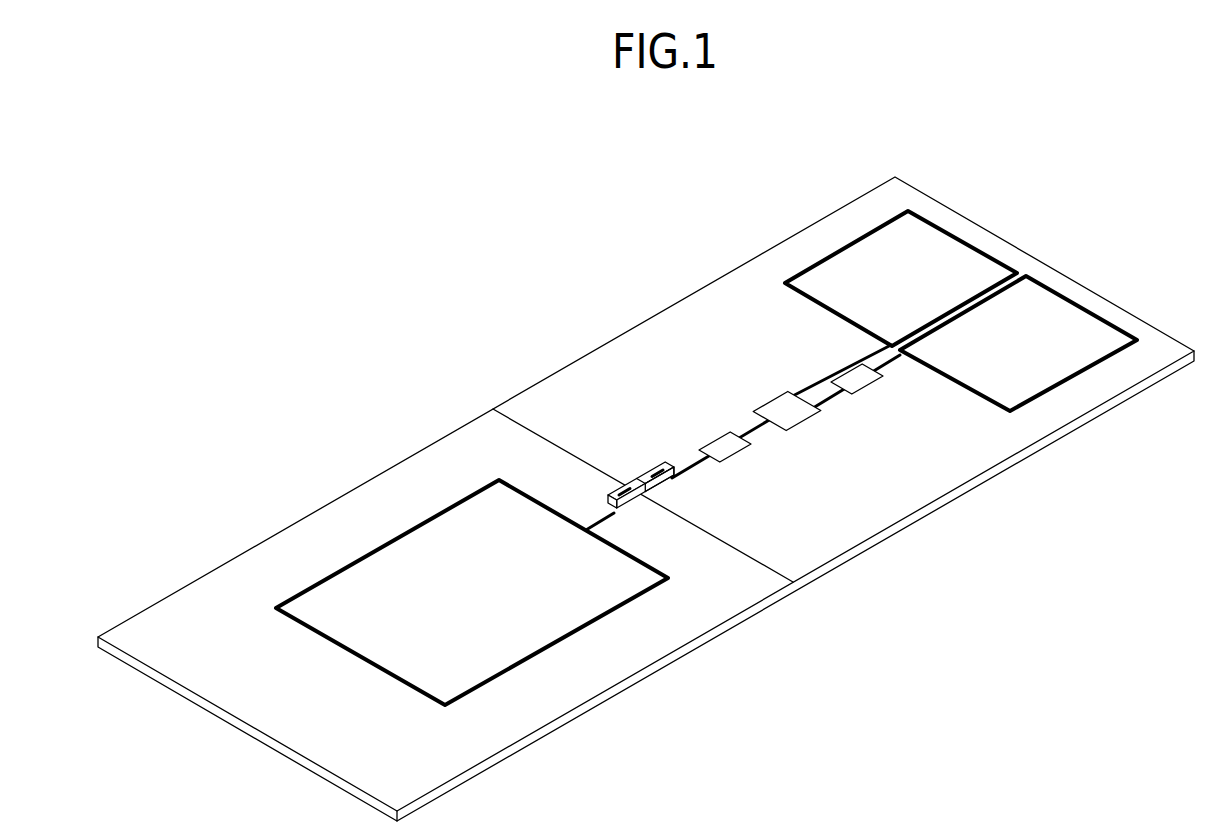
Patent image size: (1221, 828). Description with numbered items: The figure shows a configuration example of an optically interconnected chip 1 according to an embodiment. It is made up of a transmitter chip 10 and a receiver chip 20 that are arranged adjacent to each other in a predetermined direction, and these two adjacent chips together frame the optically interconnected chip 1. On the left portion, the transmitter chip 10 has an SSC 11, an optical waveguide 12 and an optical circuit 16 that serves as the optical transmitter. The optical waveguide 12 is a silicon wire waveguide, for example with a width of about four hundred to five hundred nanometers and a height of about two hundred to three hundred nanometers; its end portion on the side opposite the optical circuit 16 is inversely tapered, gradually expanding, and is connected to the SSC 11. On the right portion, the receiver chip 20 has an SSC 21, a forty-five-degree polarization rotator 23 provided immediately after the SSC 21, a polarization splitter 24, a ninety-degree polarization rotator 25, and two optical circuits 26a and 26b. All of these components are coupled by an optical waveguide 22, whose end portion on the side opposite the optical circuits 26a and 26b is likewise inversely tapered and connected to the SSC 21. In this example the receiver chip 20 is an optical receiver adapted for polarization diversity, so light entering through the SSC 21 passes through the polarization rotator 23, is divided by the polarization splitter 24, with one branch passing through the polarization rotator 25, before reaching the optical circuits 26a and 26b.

The optically interconnected chip 1 is at (306, 153).
The transmitter chip 10 is at (327, 505).
The SSC 11 is at (658, 500).
The optical waveguide 12 is at (590, 518).
The optical circuit (optical transmitter) 16 is at (538, 655).
The receiver chip 20 is at (692, 292).
The SSC 21 is at (660, 468).
The optical waveguide 22 is at (700, 463).
The 45-degree polarization rotator 23 is at (718, 446).
The polarization splitter 24 is at (798, 418).
The 90-degree polarization rotator 25 is at (863, 383).
The optical circuit 26a is at (962, 258).
The optical circuit 26b is at (1068, 317).